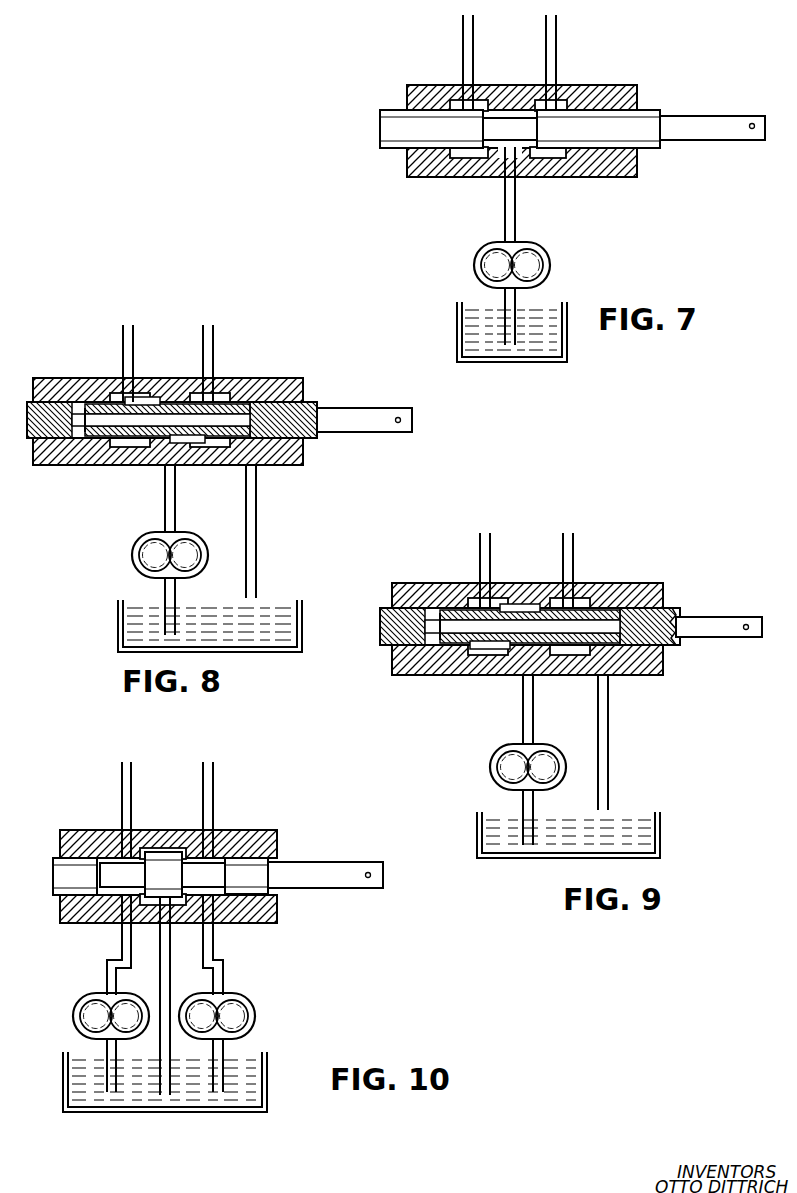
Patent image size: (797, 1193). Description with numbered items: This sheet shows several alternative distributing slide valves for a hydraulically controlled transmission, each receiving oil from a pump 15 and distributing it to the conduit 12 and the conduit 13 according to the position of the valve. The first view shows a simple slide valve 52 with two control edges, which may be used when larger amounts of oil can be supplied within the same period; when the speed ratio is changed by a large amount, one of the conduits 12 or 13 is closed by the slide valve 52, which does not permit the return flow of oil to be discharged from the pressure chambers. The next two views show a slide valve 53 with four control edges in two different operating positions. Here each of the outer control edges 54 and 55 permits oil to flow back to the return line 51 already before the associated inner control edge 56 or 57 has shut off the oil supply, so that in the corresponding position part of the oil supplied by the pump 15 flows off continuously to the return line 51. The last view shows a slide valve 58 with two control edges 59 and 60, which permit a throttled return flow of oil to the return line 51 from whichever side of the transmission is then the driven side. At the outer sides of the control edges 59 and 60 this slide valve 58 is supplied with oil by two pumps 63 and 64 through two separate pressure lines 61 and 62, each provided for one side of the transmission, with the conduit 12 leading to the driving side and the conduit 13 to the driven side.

In FIG. 7, the conduit 12 is at (463, 47).
In FIG. 8, the conduit 12 is at (124, 340).
In FIG. 9, the conduit 12 is at (481, 552).
In FIG. 10, the conduit 12 is at (122, 792).
In FIG. 7, the conduit 13 is at (553, 45).
In FIG. 8, the conduit 13 is at (210, 340).
In FIG. 9, the conduit 13 is at (570, 550).
In FIG. 10, the conduit 13 is at (212, 790).
In FIG. 7, the pump 15 is at (532, 264).
In FIG. 8, the pump 15 is at (150, 554).
In FIG. 9, the pump 15 is at (510, 768).
In FIG. 8, the return line 51 is at (256, 548).
In FIG. 9, the return line 51 is at (608, 762).
In FIG. 10, the return line 51 is at (172, 1036).
In FIG. 7, the slide valve 52 is at (392, 128).
In FIG. 8, the slide valve 53 is at (219, 419).
In FIG. 9, the slide valve 53 is at (562, 632).
In FIG. 8, the outer control edge 54 is at (100, 406).
In FIG. 9, the outer control edge 54 is at (455, 612).
In FIG. 8, the outer control edge 55 is at (240, 406).
In FIG. 9, the outer control edge 55 is at (600, 612).
In FIG. 8, the inner control edge 56 is at (140, 398).
In FIG. 9, the inner control edge 56 is at (505, 648).
In FIG. 8, the inner control edge 57 is at (195, 442).
In FIG. 9, the inner control edge 57 is at (548, 605).
In FIG. 10, the slide valve 58 is at (60, 870).
In FIG. 10, the control edge 59 is at (148, 858).
In FIG. 10, the control edge 60 is at (200, 880).
In FIG. 10, the pressure line 61 is at (108, 958).
In FIG. 10, the pressure line 62 is at (218, 963).
In FIG. 10, the pump 63 is at (92, 1010).
In FIG. 10, the pump 64 is at (236, 1010).